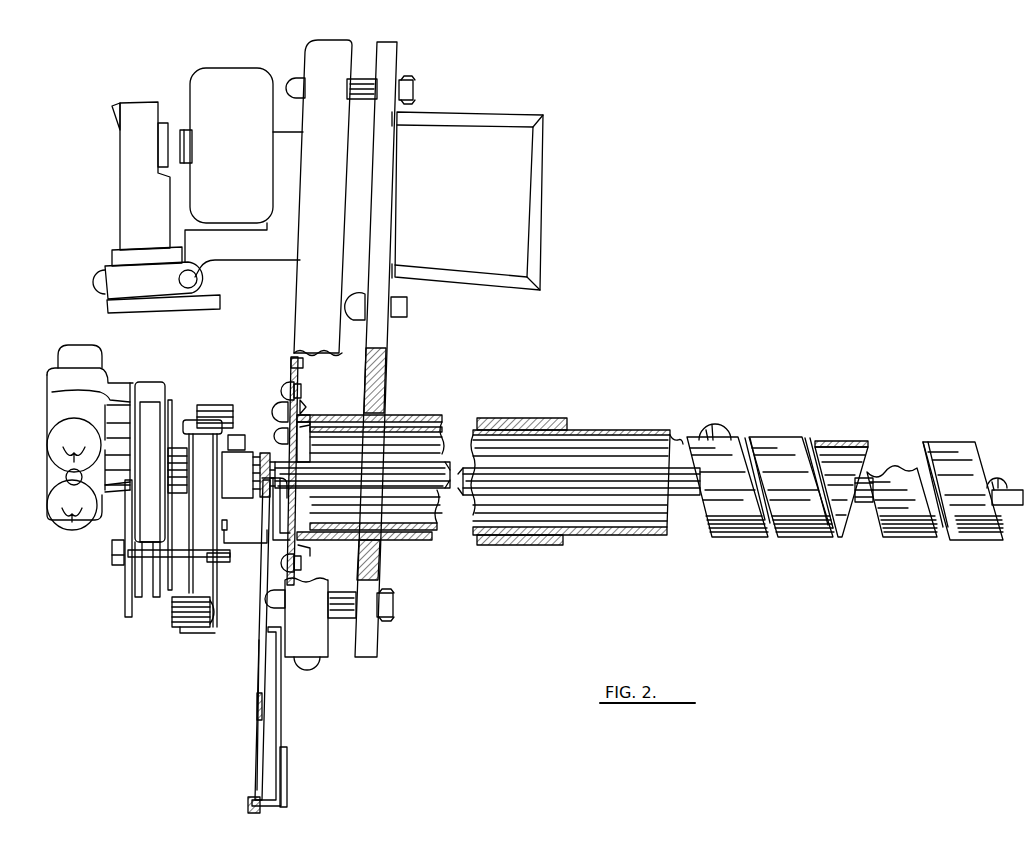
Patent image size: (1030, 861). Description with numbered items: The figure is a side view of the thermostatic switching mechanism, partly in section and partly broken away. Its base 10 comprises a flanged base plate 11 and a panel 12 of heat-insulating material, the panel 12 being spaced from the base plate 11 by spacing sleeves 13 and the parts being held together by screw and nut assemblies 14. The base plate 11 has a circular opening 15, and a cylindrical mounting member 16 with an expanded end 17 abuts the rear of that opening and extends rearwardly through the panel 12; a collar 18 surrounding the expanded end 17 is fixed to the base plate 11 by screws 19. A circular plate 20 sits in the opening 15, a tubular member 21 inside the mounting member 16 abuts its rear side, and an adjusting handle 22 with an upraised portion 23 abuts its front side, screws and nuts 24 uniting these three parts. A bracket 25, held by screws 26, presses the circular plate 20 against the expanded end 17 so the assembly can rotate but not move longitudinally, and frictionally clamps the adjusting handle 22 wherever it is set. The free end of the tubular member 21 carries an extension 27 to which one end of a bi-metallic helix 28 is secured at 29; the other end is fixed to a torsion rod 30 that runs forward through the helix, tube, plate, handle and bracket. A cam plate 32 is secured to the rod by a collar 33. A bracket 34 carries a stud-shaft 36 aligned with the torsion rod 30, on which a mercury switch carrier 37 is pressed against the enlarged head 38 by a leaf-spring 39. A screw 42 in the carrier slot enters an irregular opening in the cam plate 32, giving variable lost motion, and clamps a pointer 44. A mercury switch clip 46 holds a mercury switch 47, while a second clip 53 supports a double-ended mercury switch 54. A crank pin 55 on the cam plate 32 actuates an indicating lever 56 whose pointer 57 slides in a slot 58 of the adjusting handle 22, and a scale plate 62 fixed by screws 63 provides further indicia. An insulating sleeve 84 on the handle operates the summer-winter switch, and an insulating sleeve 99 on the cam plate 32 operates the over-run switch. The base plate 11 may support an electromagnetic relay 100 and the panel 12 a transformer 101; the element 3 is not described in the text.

The coil end 3 is at (1005, 484).
The base 10 is at (366, 711).
The flanged base plate 11 is at (303, 300).
The panel of heat-insulating material 12 is at (370, 640).
The spacing sleeves 13 is at (373, 80).
The screw and nut assemblies 14 is at (413, 88).
The circular opening 15 is at (304, 404).
The cylindrical mounting member 16 is at (522, 545).
The expanded end 17 is at (306, 418).
The collar 18 is at (291, 362).
The screws 19 is at (285, 390).
The circular plate 20 is at (300, 548).
The tubular member 21 is at (624, 535).
The adjusting handle 22 is at (262, 618).
The upraised portion 23 is at (268, 509).
The screws and nuts 24 is at (334, 418).
The bracket 25 is at (281, 437).
The screws 26 is at (281, 410).
The extension 27 is at (680, 434).
The bi-metallic helix 28 is at (822, 440).
The securing point of helix to extension 29 is at (720, 428).
The torsion rod 30 is at (862, 501).
The cam plate 32 is at (213, 599).
The collar 33 is at (249, 487).
The bracket 34 is at (192, 490).
The stud-shaft 36 is at (147, 474).
The mercury switch carrier 37 is at (152, 383).
The enlarged head 38 is at (126, 487).
The leaf-spring 39 is at (173, 447).
The screw 42 is at (110, 548).
The pointer 44 is at (126, 568).
The mercury switch clip 46 is at (110, 373).
The mercury switch 47 is at (53, 408).
The mercury switch clip 53 is at (120, 488).
The mercury switch 54 is at (50, 508).
The crank pin 55 is at (230, 516).
The indicating lever 56 is at (276, 722).
The pointer 57 is at (248, 803).
The slot 58 is at (255, 735).
The scale plate 62 is at (290, 658).
The screws 63 is at (310, 661).
The insulating sleeve 84 is at (205, 405).
The insulating sleeve 99 is at (200, 628).
The electromagnetic relay 100 is at (165, 94).
The transformer 101 is at (560, 205).